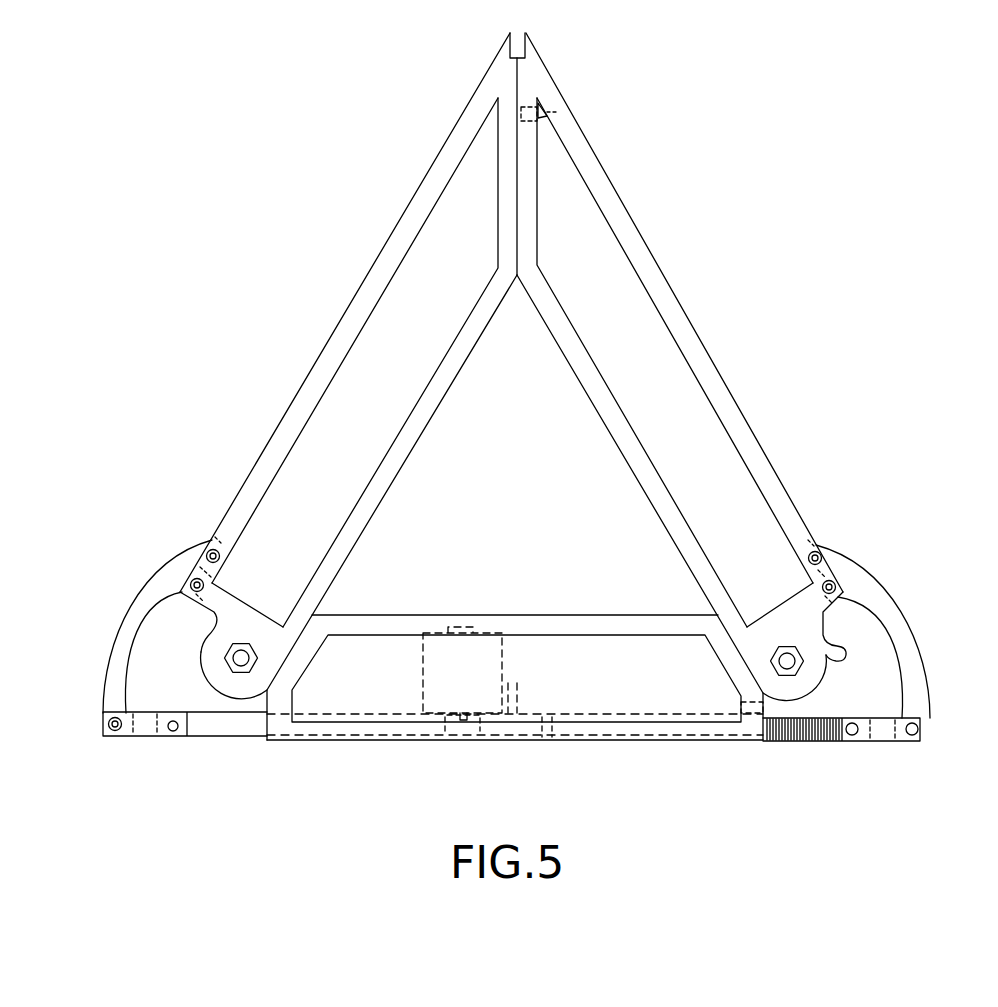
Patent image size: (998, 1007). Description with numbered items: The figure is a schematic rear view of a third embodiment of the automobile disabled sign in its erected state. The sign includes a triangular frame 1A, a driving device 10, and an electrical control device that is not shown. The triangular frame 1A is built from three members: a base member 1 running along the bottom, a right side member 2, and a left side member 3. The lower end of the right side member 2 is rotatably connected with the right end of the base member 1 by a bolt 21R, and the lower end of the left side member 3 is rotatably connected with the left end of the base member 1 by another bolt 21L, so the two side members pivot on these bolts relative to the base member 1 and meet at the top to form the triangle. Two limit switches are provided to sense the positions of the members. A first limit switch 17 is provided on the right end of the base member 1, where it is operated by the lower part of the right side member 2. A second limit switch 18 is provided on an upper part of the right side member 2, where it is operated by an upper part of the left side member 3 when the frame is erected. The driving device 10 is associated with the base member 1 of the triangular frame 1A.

The base member 1 is at (550, 745).
The triangular frame 1A is at (652, 228).
The right side member 2 is at (724, 381).
The left side member 3 is at (333, 332).
The driving device 10 is at (411, 743).
The first limit switch 17 is at (752, 744).
The second limit switch 18 is at (530, 99).
The bolt 21L is at (232, 660).
The bolt 21R is at (790, 661).